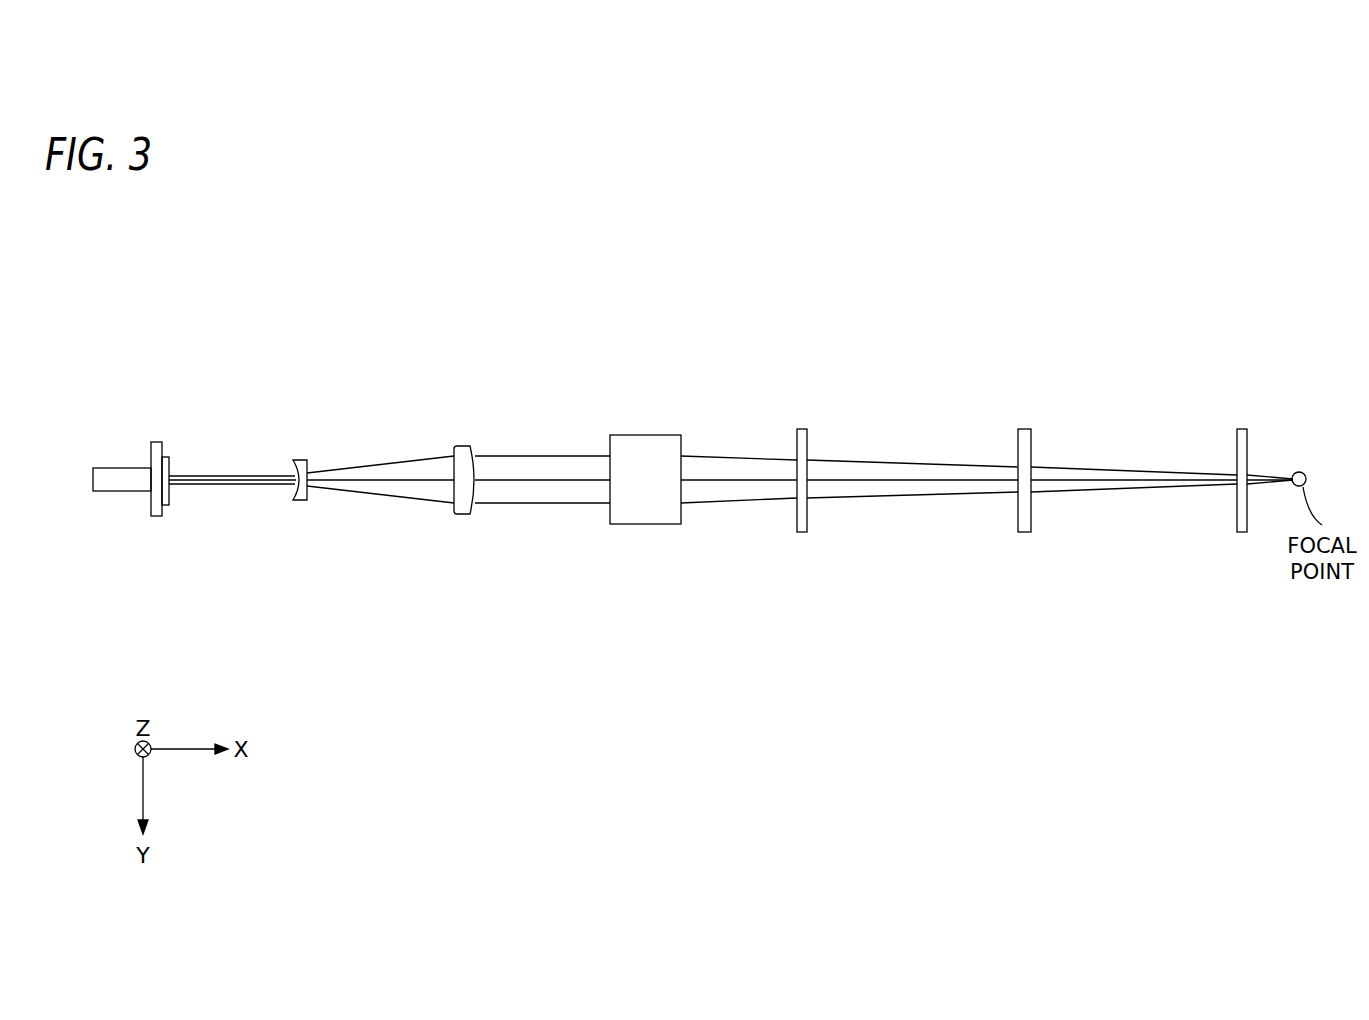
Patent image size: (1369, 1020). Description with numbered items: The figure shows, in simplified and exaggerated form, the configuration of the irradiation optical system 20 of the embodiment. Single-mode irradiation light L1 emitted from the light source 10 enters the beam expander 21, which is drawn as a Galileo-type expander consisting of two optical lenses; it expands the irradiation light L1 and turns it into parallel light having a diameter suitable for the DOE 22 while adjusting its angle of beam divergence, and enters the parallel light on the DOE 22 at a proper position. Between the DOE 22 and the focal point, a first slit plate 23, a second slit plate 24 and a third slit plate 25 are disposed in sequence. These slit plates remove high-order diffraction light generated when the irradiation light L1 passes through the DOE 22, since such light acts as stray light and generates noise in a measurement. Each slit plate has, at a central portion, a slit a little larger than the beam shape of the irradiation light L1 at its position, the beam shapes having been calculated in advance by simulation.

The light source 10 is at (122, 468).
The irradiation light L1 is at (260, 484).
The irradiation optical system 20 is at (279, 315).
The beam expander 21 is at (278, 437).
The DOE 22 is at (640, 433).
The first slit plate 23 is at (802, 429).
The second slit plate 24 is at (1024, 429).
The third slit plate 25 is at (1243, 429).